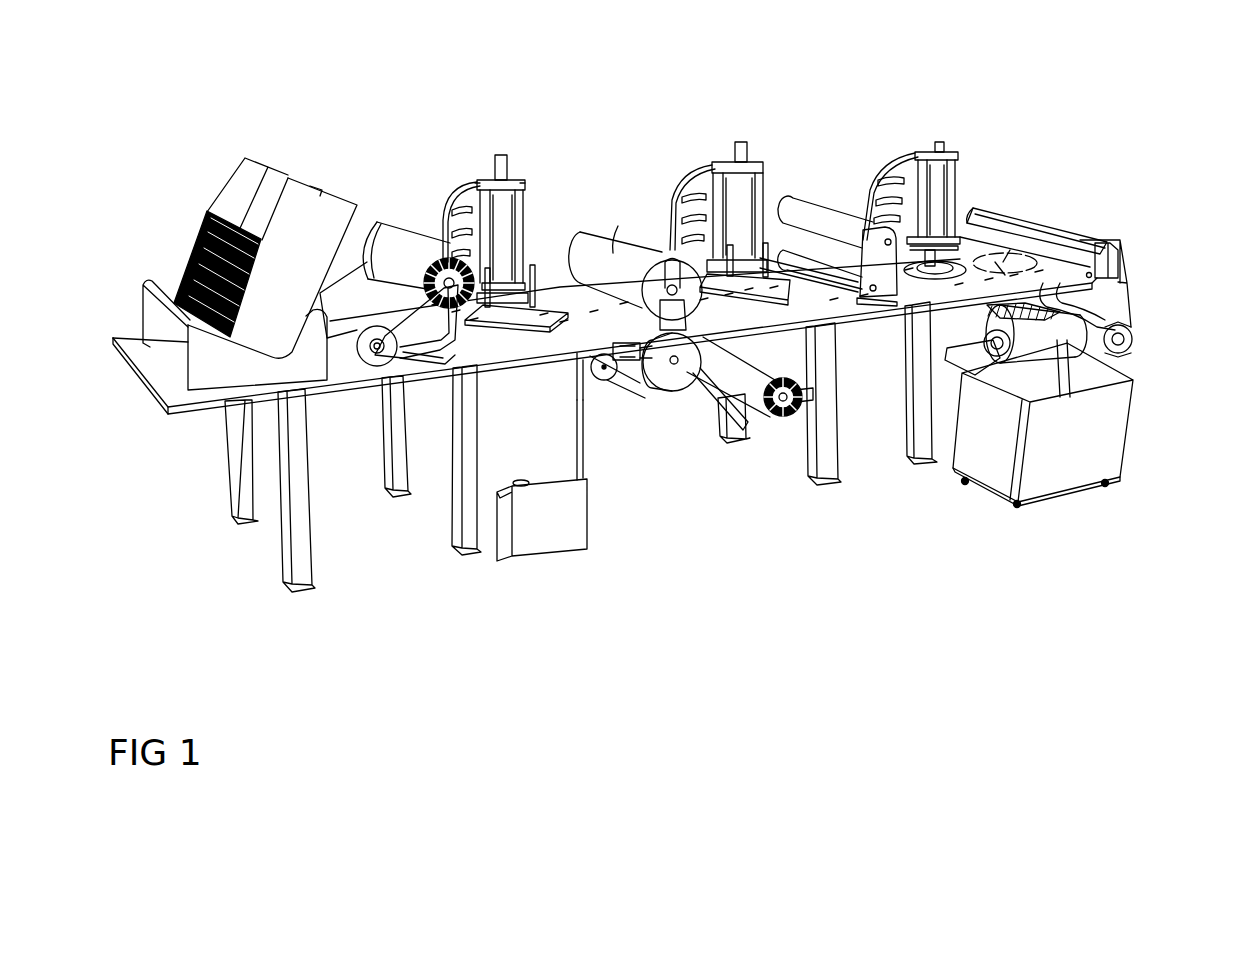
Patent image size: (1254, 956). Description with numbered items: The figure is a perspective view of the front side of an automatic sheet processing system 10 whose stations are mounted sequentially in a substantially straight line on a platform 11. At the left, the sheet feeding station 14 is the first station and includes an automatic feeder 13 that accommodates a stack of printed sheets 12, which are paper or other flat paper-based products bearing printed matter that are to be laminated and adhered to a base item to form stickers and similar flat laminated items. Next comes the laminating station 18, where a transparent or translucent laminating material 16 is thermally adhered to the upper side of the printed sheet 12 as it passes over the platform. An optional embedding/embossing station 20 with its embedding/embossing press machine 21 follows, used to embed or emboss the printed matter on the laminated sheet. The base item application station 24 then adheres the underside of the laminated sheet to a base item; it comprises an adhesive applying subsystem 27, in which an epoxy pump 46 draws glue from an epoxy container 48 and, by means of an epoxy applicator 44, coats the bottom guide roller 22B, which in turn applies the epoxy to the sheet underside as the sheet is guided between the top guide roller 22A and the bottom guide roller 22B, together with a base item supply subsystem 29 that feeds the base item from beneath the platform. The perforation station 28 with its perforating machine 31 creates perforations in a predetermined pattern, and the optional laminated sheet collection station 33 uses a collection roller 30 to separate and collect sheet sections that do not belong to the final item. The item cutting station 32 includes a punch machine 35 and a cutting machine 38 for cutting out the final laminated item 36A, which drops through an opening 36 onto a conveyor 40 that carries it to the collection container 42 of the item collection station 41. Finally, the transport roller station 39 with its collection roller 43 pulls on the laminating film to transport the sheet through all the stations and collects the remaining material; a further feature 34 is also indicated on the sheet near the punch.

The automatic sheet processing system 10 is at (701, 74).
The platform 11 is at (326, 388).
The printed sheets 12 is at (178, 300).
The automatic feeder 13 is at (283, 176).
The sheet feeding station 14 is at (250, 214).
The laminating material 16 is at (372, 287).
The laminating station 18 is at (426, 93).
The embedding/embossing station 20 is at (516, 190).
The embedding/embossing press machine 21 is at (507, 228).
The top guide roller 22A is at (617, 250).
The bottom guide roller 22B is at (688, 368).
The base item application station 24 is at (684, 163).
The adhesive applying subsystem 27 is at (654, 362).
The perforation station 28 is at (735, 181).
The base item supply subsystem 29 is at (773, 442).
The collection roller 30 is at (815, 215).
The perforating machine 31 is at (745, 206).
The item cutting station 32 is at (943, 167).
The laminated sheet collection station 33 is at (882, 128).
The die opening 34 is at (1002, 257).
The punch machine 35 is at (946, 190).
The opening 36 is at (1003, 263).
The final laminated item 36A is at (1040, 303).
The cutting machine 38 is at (1010, 216).
The transport roller station 39 is at (1090, 302).
The conveyor 40 is at (1082, 347).
The item collection station 41 is at (1029, 458).
The collection container 42 is at (1093, 453).
The collection roller 43 is at (1133, 328).
The epoxy applicator 44 is at (660, 383).
The epoxy pump 46 is at (600, 380).
The epoxy container 48 is at (580, 533).